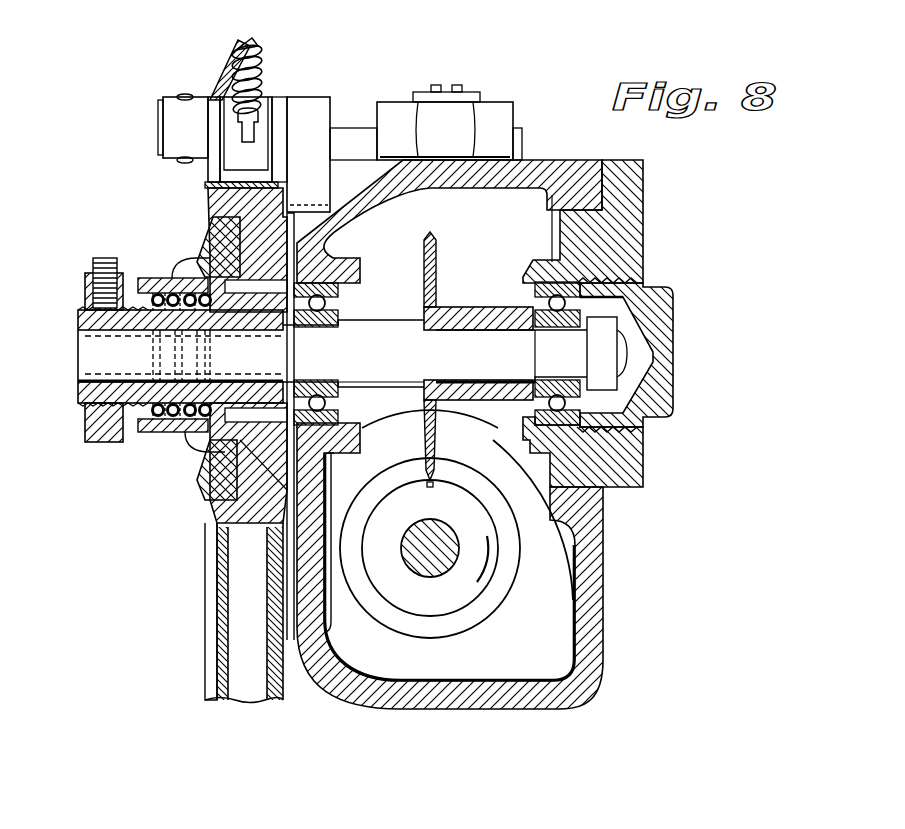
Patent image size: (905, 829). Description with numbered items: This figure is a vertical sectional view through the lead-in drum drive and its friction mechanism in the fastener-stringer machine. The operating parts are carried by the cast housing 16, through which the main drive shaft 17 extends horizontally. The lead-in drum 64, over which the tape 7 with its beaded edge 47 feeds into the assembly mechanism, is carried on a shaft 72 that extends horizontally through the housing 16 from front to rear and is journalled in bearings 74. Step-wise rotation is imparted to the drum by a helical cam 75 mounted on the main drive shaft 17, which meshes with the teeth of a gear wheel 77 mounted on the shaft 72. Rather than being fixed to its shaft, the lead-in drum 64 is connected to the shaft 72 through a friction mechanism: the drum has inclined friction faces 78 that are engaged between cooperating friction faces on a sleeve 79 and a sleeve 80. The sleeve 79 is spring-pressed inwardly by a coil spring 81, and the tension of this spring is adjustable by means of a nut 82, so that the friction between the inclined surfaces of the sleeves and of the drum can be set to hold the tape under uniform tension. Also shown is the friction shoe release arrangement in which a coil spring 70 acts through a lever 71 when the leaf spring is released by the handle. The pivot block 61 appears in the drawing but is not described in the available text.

The tape 7 is at (268, 182).
The housing 16 is at (577, 168).
The main drive shaft 17 is at (431, 570).
The beaded edge 47 is at (207, 185).
The pivot block 61 is at (263, 105).
The lead-in drum 64 is at (218, 510).
The coil spring 70 is at (262, 60).
The lever 71 is at (212, 125).
The shaft 72 is at (87, 355).
The bearings 74 is at (522, 298).
The helical cam 75 is at (465, 603).
The gear wheel 77 is at (433, 248).
The inclined friction faces 78 is at (212, 507).
The sleeve 79 is at (203, 232).
The sleeve 80 is at (288, 474).
The coil spring 81 is at (168, 277).
The nut 82 is at (90, 430).